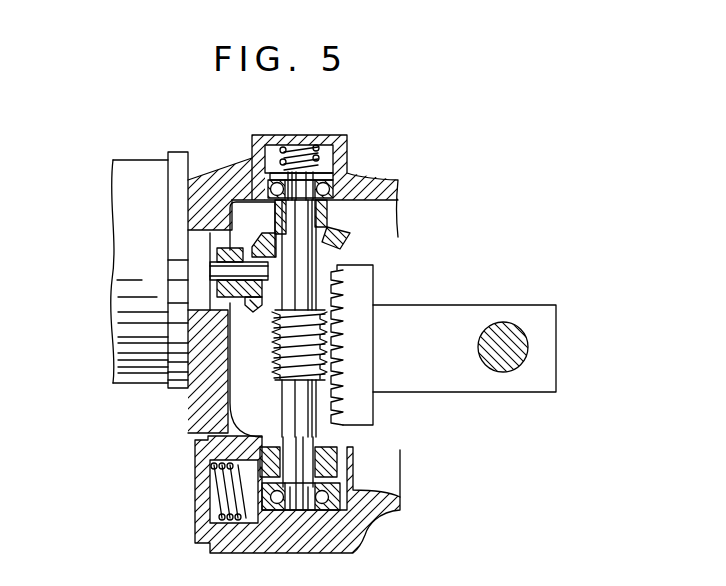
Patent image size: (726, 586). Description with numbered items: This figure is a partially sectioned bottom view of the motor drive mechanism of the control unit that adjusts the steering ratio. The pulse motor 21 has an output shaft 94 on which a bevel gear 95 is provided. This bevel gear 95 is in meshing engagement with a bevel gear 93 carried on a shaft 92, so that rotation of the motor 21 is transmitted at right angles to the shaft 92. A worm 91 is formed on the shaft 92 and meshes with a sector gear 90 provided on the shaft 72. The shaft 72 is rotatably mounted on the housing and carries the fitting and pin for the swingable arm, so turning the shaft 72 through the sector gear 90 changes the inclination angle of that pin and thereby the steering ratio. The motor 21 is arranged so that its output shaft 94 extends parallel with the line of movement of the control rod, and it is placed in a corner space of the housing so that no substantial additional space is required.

The pulse motor 21 is at (123, 255).
The shaft 72 is at (502, 323).
The sector gear 90 is at (355, 400).
The worm 91 is at (270, 357).
The shaft 92 is at (316, 268).
The bevel gear 93 is at (329, 238).
The output shaft 94 is at (233, 241).
The bevel gear 95 is at (252, 309).